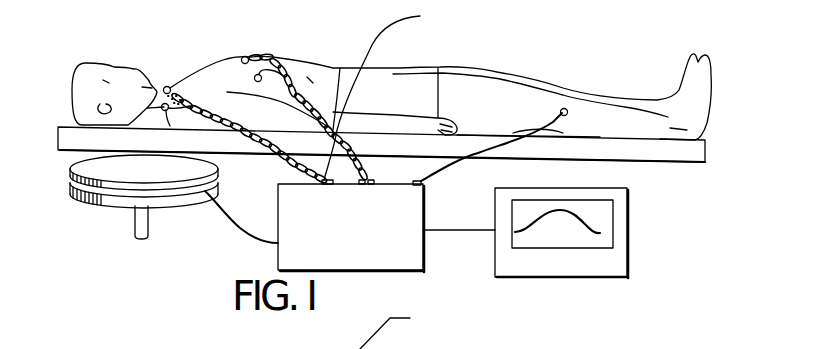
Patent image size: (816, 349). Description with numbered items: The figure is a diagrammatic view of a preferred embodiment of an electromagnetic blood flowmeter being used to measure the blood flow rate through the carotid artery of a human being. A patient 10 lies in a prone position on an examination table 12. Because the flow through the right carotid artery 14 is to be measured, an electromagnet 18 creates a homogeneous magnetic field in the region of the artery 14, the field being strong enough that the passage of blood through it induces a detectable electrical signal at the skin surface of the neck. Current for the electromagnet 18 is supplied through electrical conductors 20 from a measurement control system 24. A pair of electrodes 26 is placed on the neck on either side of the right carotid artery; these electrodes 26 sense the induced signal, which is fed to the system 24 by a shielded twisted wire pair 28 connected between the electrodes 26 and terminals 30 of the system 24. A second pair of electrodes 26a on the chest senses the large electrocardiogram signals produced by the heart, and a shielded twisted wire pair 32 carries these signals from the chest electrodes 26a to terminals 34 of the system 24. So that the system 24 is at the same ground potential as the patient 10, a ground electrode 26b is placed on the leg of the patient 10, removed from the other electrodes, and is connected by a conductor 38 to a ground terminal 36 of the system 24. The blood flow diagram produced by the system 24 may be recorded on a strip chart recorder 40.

The patient 10 is at (620, 91).
The examination table 12 is at (692, 160).
The right carotid artery 14 is at (182, 92).
The electromagnet 18 is at (85, 205).
The electrical conductors 20 is at (242, 232).
The measurement control system 24 is at (424, 270).
The pair of electrodes 26 is at (169, 88).
The second pair of electrodes 26a is at (249, 57).
The ground electrode 26b is at (568, 108).
The shielded twisted wire pair 28 is at (283, 157).
The terminals 30 is at (356, 91).
The shielded twisted wire pair 32 is at (346, 147).
The terminals 34 is at (374, 181).
The ground terminal 36 is at (421, 181).
The conductor 38 is at (478, 158).
The strip chart recorder 40 is at (628, 268).